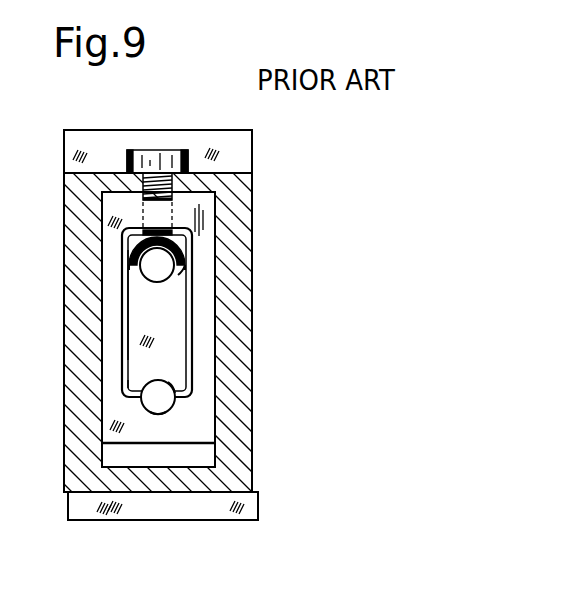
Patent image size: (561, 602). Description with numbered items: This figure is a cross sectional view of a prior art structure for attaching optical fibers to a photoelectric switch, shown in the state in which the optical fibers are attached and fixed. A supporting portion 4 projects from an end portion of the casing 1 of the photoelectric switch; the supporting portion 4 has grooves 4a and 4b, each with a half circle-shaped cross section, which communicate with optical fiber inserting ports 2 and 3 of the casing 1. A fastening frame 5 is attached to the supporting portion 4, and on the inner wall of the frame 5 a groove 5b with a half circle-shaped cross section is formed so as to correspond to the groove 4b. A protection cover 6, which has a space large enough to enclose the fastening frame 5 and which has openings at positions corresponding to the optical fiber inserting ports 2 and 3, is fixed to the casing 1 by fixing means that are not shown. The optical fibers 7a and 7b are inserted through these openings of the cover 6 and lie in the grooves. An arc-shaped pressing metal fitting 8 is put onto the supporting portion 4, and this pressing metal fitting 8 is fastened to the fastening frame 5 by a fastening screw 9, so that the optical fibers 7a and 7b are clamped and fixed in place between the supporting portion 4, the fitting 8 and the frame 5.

The casing 1 is at (64, 137).
The optical fiber inserting port 2 is at (185, 266).
The optical fiber inserting port 3 is at (142, 410).
The supporting portion 4 is at (184, 352).
The groove 4a is at (127, 305).
The groove 4b is at (124, 378).
The fastening frame 5 is at (204, 428).
The groove 5b is at (159, 414).
The protection cover 6 is at (245, 476).
The optical fiber 7a is at (140, 267).
The optical fiber 7b is at (178, 382).
The pressing metal fitting 8 is at (124, 232).
The fastening screw 9 is at (165, 150).